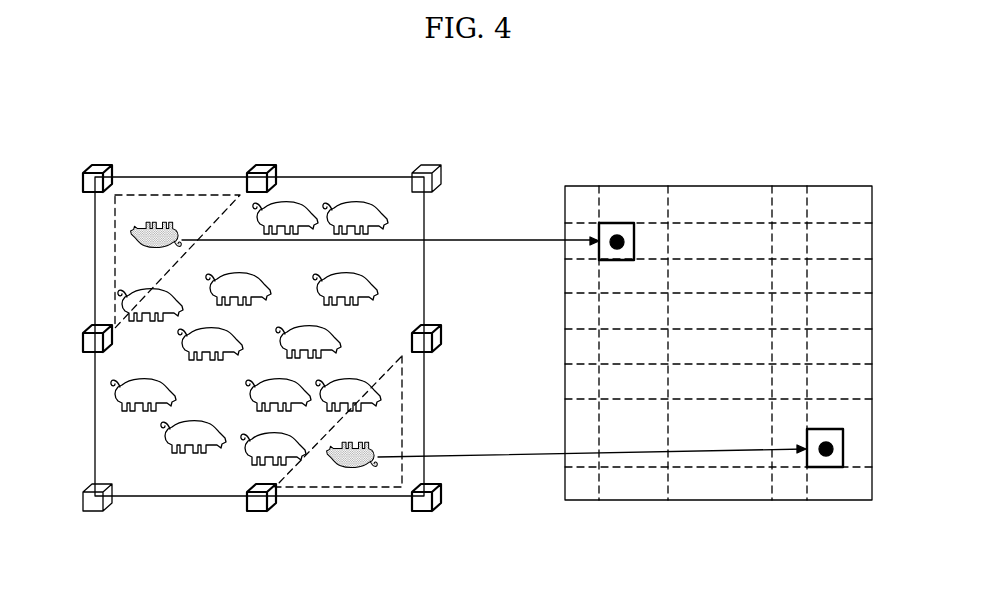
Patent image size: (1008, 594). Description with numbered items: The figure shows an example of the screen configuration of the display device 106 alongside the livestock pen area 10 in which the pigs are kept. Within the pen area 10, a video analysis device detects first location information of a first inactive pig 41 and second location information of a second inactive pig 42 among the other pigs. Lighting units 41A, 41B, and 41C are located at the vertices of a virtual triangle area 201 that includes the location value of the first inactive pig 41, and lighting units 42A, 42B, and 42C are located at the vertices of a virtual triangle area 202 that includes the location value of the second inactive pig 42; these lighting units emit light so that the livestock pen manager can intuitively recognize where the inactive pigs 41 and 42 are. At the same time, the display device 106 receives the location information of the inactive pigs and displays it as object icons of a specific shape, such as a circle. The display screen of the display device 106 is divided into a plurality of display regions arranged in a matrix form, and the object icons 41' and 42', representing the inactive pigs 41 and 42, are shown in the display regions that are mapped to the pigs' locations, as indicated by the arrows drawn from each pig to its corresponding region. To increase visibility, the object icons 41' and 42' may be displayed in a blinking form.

The livestock barn / pen area 10 is at (357, 177).
The lighting unit 42A is at (97, 165).
The lighting unit 42B is at (262, 165).
The lighting unit 42C is at (88, 325).
The lighting unit 41A is at (441, 338).
The lighting unit 41B is at (441, 497).
The lighting unit 41C is at (255, 513).
The second inactive pig 42 is at (365, 193).
The first inactive pig 41 is at (566, 493).
The virtual triangle area 202 is at (204, 195).
The virtual triangle area 201 is at (310, 487).
The display device 106 is at (683, 186).
The object icon 41' is at (610, 200).
The object icon 42' is at (823, 491).